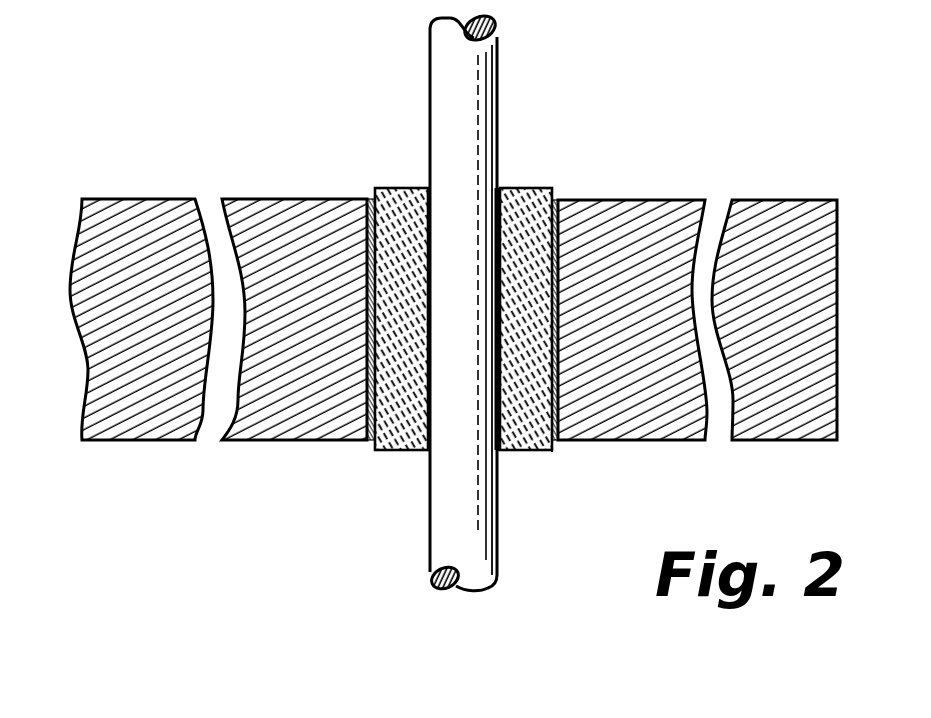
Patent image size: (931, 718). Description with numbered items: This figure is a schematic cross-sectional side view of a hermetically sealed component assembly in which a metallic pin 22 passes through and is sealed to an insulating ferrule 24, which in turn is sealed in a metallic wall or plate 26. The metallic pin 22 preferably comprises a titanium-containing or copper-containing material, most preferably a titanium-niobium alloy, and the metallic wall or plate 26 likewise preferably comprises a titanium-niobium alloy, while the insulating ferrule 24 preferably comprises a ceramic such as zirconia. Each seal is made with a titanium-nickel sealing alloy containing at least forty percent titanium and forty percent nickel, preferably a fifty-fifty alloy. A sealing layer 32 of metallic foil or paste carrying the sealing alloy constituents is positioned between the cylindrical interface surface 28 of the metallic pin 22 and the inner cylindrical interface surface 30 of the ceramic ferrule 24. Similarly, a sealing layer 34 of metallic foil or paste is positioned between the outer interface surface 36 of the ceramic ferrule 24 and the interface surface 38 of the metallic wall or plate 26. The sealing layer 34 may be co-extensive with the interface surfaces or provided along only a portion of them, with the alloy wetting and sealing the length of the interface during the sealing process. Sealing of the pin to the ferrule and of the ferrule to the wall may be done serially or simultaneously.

The metallic pin 22 is at (452, 105).
The insulating ferrule 24 is at (540, 188).
The metallic wall or plate 26 is at (634, 318).
The cylindrical interface surface 28 is at (430, 148).
The inner cylindrical interface surface 30 is at (504, 455).
The sealing layer 32 is at (499, 188).
The sealing layer 34 is at (370, 197).
The outer interface surface 36 is at (556, 199).
The interface surface 38 is at (554, 452).